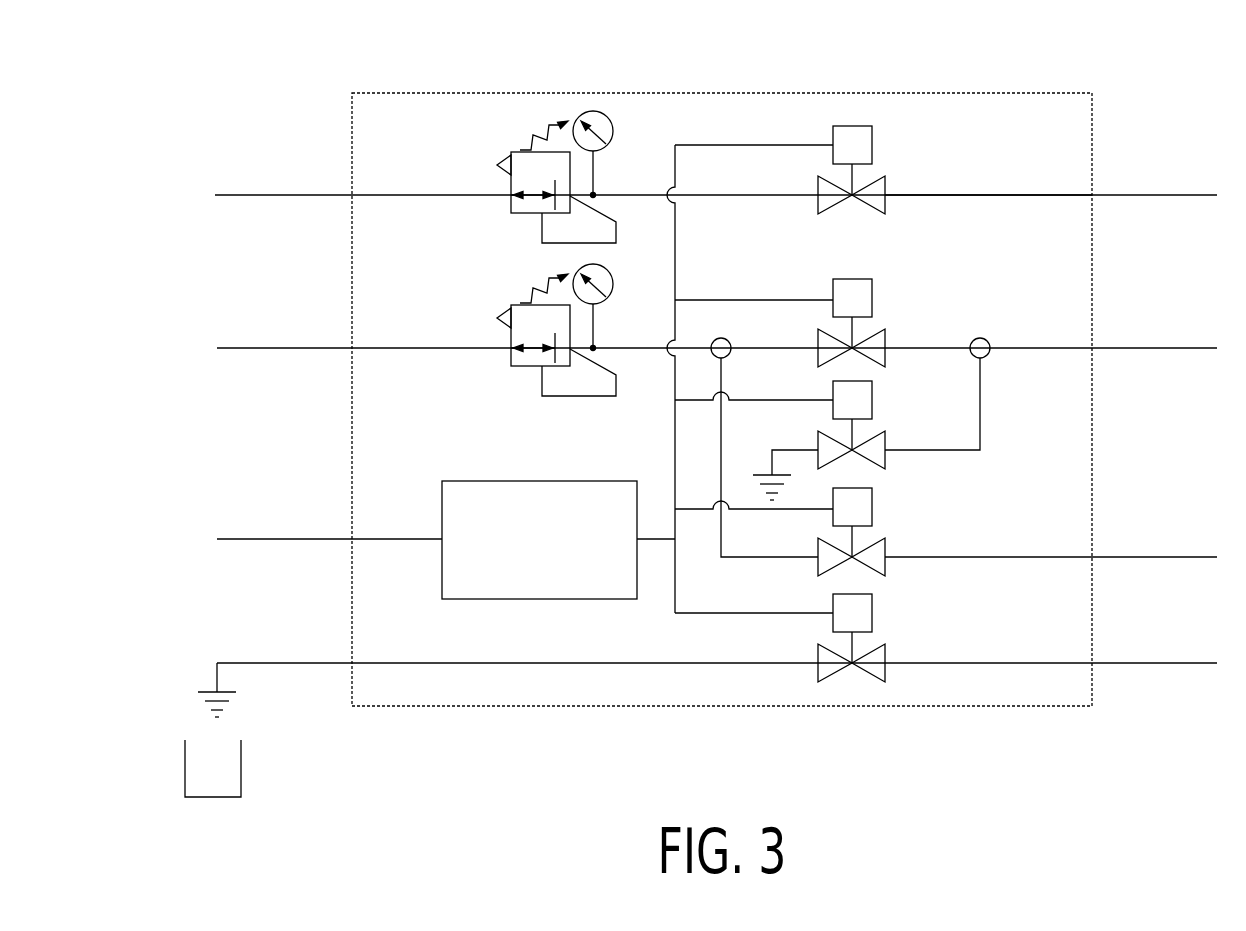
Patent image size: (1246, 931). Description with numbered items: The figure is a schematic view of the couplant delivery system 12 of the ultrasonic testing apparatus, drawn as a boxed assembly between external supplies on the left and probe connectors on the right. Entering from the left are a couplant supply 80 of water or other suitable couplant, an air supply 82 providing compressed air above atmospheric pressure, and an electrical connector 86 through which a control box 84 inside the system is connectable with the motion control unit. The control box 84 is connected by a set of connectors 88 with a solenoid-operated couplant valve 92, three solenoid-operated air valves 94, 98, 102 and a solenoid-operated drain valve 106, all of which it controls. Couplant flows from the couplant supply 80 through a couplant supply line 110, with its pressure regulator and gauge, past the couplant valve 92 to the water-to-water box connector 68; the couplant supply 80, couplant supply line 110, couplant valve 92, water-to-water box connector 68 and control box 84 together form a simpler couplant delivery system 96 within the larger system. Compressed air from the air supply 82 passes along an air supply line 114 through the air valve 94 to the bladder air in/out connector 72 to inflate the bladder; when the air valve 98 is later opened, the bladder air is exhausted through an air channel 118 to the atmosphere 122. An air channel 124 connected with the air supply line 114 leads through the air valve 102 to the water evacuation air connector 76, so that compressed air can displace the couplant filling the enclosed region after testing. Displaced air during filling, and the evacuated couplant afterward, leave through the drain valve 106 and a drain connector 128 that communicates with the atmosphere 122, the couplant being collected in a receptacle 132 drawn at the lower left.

The couplant delivery system 12 is at (805, 90).
The couplant supply 80 is at (273, 194).
The water-to-water box connector 68 is at (1157, 194).
The couplant delivery system 96 is at (1066, 184).
The air supply 82 is at (273, 347).
The bladder air in/out connector 72 is at (1157, 347).
The electrical connector 86 is at (273, 538).
The water evacuation air connector 76 is at (1157, 556).
The drain connector 128 is at (565, 663).
The couplant supply line 110 is at (392, 194).
The air supply line 114 is at (392, 347).
The control box 84 is at (465, 481).
The set of connectors 88 is at (657, 538).
The solenoid-operated couplant valve 92 is at (884, 173).
The solenoid-operated air valve 94 is at (884, 326).
The solenoid-operated air valve 98 is at (884, 428).
The solenoid-operated air valve 102 is at (884, 535).
The solenoid-operated drain valve 106 is at (884, 641).
The air channel 124 is at (782, 558).
The air channel 118 is at (983, 440).
The atmosphere 122 is at (770, 473).
The receptacle 132 is at (242, 768).